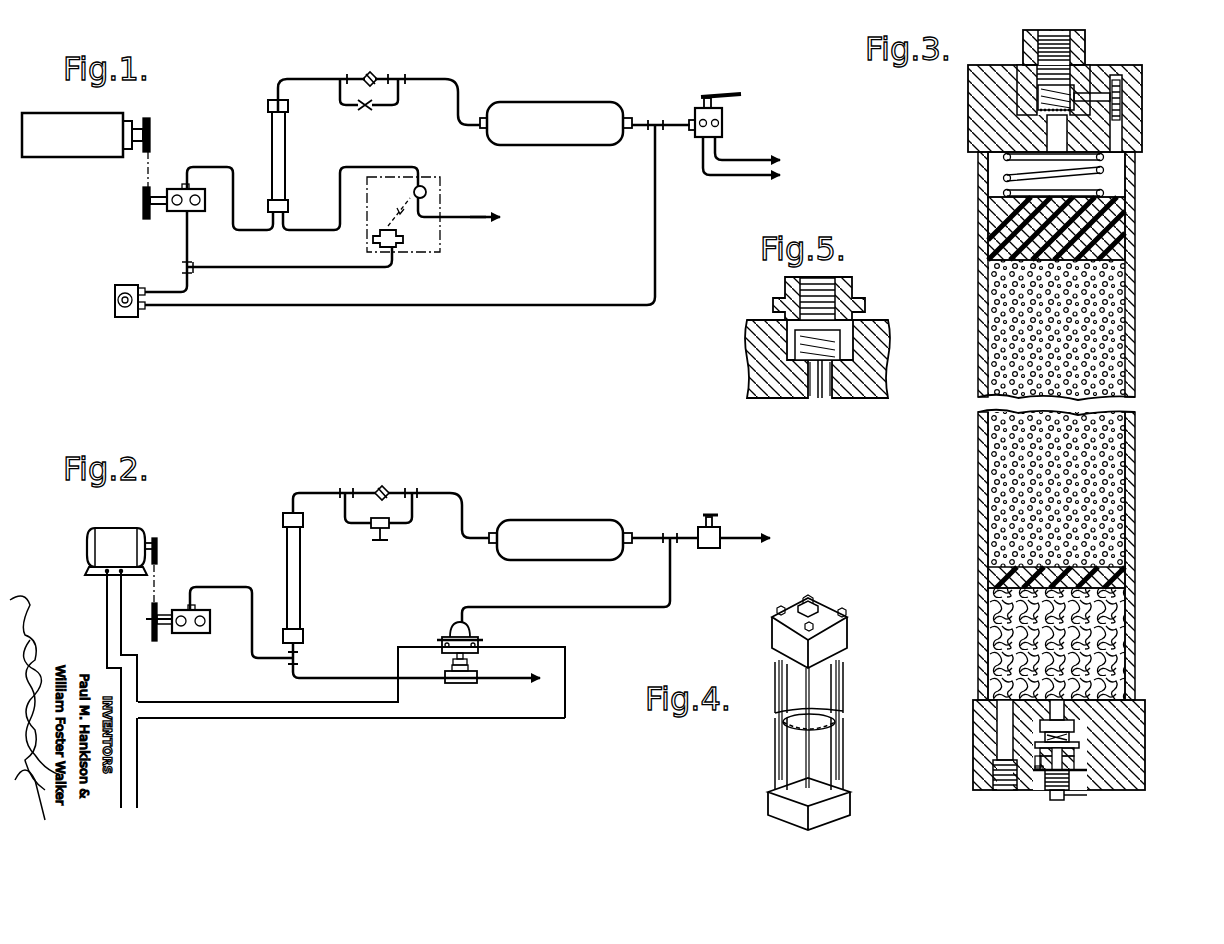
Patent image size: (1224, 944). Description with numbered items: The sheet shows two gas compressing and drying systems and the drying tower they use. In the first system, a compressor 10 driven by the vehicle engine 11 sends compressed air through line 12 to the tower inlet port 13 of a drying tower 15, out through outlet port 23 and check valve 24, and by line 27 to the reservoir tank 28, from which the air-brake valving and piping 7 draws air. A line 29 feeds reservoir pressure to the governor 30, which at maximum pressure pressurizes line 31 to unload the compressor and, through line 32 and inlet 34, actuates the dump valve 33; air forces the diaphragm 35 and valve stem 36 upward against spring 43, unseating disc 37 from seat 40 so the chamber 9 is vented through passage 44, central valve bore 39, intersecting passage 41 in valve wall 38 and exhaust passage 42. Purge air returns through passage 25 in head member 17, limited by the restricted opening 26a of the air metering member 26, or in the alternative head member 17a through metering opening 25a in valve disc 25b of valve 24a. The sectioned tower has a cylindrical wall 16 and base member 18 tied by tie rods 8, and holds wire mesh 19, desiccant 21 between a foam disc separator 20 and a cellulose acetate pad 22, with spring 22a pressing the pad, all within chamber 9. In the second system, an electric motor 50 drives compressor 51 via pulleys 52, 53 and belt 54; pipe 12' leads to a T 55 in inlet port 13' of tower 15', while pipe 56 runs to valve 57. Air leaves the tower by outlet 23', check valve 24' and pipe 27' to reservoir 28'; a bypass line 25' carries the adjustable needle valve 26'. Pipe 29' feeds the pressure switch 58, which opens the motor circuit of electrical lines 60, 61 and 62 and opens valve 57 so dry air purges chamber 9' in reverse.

In FIG. 1, the air-brake valving and piping 7 is at (724, 131).
In FIG. 4, the tie rods 8 is at (841, 675).
In FIG. 3, the chamber 9 is at (1081, 174).
In FIG. 2, the chamber 9' is at (270, 546).
In FIG. 1, the compressor 10 is at (190, 212).
In FIG. 1, the engine 11 is at (70, 158).
In FIG. 1, the line 12 is at (230, 186).
In FIG. 2, the pipe 12' is at (241, 611).
In FIG. 1, the tower inlet port 13 is at (318, 213).
In FIG. 3, the tower inlet port 13 is at (989, 760).
In FIG. 2, the inlet port 13' is at (329, 652).
In FIG. 1, the drying tower 15 is at (259, 156).
In FIG. 3, the drying tower 15 is at (1034, 426).
In FIG. 4, the drying tower 15 is at (794, 720).
In FIG. 2, the tower 15' is at (317, 578).
In FIG. 3, the cylindrical wall 16 is at (1135, 416).
In FIG. 4, the cylindrical wall 16 is at (825, 735).
In FIG. 3, the head member 17 is at (968, 95).
In FIG. 4, the head member 17 is at (778, 630).
In FIG. 5, the head member 17a is at (760, 345).
In FIG. 3, the base member 18 is at (973, 715).
In FIG. 4, the base member 18 is at (778, 801).
In FIG. 3, the stainless steel wire mesh 19 is at (990, 652).
In FIG. 3, the porous foam disc separator 20 is at (1135, 573).
In FIG. 3, the desiccant 21 is at (1100, 367).
In FIG. 3, the cellulose acetate pad 22 is at (1132, 225).
In FIG. 3, the spring 22a is at (990, 180).
In FIG. 1, the outlet port 23 is at (341, 78).
In FIG. 3, the outlet port 23 is at (997, 132).
In FIG. 2, the outlet line 23' is at (350, 484).
In FIG. 1, the check valve 24 is at (376, 65).
In FIG. 3, the check valve 24 is at (1074, 64).
In FIG. 4, the check valve 24 is at (837, 598).
In FIG. 2, the check valve 24' is at (378, 477).
In FIG. 5, the valve 24a is at (858, 297).
In FIG. 1, the passage 25 is at (388, 101).
In FIG. 3, the passage 25 is at (1092, 73).
In FIG. 2, the bypass line 25' is at (398, 520).
In FIG. 5, the metering opening 25a is at (812, 398).
In FIG. 5, the valve disc 25b is at (828, 398).
In FIG. 1, the air metering member 26 is at (382, 120).
In FIG. 3, the air metering member 26 is at (1148, 113).
In FIG. 2, the needle type valve 26' is at (403, 545).
In FIG. 3, the restricted opening 26a is at (1125, 112).
In FIG. 1, the line 27 is at (443, 84).
In FIG. 2, the pipe 27' is at (458, 496).
In FIG. 1, the reservoir tank 28 is at (556, 107).
In FIG. 2, the reservoir 28' is at (560, 525).
In FIG. 1, the line 29 is at (417, 212).
In FIG. 2, the pipe 29' is at (616, 568).
In FIG. 1, the governor 30 is at (138, 318).
In FIG. 1, the line 31 is at (186, 248).
In FIG. 1, the line 32 is at (305, 268).
In FIG. 1, the dump valve 33 is at (445, 253).
In FIG. 3, the dump valve 33 is at (1082, 795).
In FIG. 1, the inlet 34 is at (395, 259).
In FIG. 3, the inlet 34 is at (1060, 800).
In FIG. 1, the diaphragm 35 is at (373, 236).
In FIG. 3, the diaphragm 35 is at (1050, 785).
In FIG. 1, the valve stem 36 is at (391, 205).
In FIG. 3, the valve stem 36 is at (1085, 775).
In FIG. 1, the disc 37 is at (428, 192).
In FIG. 3, the disc 37 is at (1075, 735).
In FIG. 3, the valve wall 38 is at (1035, 760).
In FIG. 1, the central valve bore 39 is at (468, 217).
In FIG. 3, the central valve bore 39 is at (1035, 770).
In FIG. 3, the seat 40 is at (1075, 743).
In FIG. 3, the intersecting passage 41 is at (1090, 765).
In FIG. 3, the exhaust passage 42 is at (1090, 750).
In FIG. 3, the spring 43 is at (1065, 720).
In FIG. 1, the passage 44 is at (410, 167).
In FIG. 3, the passage 44 is at (1060, 705).
In FIG. 2, the electric motor 50 is at (115, 530).
In FIG. 2, the compressor 51 is at (197, 634).
In FIG. 2, the pulley 52 is at (160, 642).
In FIG. 2, the pulley 53 is at (157, 545).
In FIG. 2, the belt 54 is at (160, 582).
In FIG. 2, the T 55 is at (300, 658).
In FIG. 2, the pipe 56 is at (362, 678).
In FIG. 2, the valve 57 is at (462, 685).
In FIG. 2, the pressure switch 58 is at (455, 637).
In FIG. 2, the electrical line 60 is at (123, 765).
In FIG. 2, the electrical line 61 is at (235, 720).
In FIG. 2, the electrical line 62 is at (218, 702).